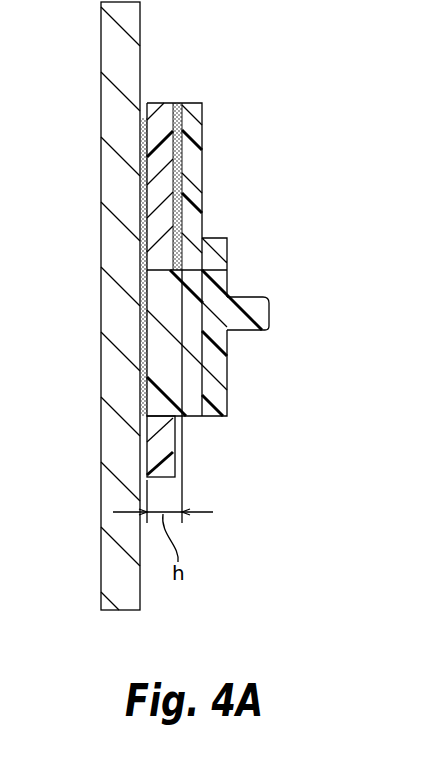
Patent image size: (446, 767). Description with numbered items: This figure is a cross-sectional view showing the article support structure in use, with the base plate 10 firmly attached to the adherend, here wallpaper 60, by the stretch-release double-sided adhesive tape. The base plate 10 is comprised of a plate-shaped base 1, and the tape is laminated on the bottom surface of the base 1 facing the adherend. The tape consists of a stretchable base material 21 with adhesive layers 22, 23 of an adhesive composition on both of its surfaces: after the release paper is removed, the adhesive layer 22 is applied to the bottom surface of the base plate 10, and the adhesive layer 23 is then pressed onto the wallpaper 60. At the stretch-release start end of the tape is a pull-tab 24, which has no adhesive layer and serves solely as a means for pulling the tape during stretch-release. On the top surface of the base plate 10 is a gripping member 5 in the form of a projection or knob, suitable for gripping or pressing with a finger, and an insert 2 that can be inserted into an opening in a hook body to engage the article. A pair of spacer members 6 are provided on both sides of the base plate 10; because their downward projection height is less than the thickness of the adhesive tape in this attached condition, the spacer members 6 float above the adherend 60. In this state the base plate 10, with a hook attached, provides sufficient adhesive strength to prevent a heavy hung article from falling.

The base 1 is at (192, 173).
The insert 2 is at (219, 268).
The gripping member 5 is at (245, 320).
The spacer members 6 is at (155, 292).
The base plate 10 is at (236, 100).
The base material 21 is at (153, 132).
The adhesive layer 22 is at (177, 103).
The adhesive layer 23 is at (142, 118).
The pull-tab 24 is at (158, 453).
The adherend (wallpaper) 60 is at (120, 593).